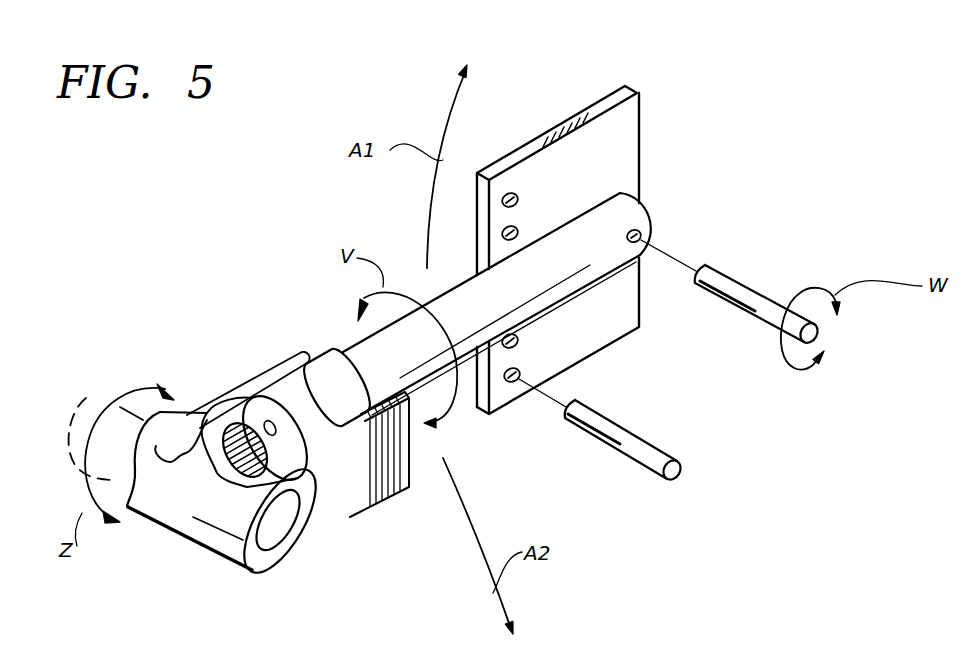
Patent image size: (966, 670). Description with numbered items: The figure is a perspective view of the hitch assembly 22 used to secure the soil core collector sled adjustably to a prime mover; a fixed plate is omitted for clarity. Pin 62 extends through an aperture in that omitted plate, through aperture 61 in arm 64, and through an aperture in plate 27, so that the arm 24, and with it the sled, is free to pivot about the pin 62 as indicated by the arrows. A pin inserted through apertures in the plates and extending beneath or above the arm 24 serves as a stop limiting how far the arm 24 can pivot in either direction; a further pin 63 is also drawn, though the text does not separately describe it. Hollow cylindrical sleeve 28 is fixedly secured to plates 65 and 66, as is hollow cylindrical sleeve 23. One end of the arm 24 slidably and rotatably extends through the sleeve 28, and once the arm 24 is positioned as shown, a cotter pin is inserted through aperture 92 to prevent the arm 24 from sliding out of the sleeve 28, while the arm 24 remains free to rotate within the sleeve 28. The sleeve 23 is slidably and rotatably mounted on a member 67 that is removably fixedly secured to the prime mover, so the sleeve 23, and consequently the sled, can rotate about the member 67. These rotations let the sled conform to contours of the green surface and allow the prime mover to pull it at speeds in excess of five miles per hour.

The hitch assembly 22 is at (668, 57).
The hollow cylindrical sleeve 23 is at (238, 557).
The arm 24 is at (510, 297).
The plate 27 is at (642, 122).
The hollow cylindrical sleeve 28 is at (300, 352).
The aperture 61 is at (638, 231).
The pin 62 is at (774, 300).
The pin 63 is at (662, 450).
The arm 64 is at (520, 372).
The plate 65 is at (516, 196).
The plate 66 is at (407, 488).
The member 67 is at (87, 397).
The aperture 92 is at (153, 517).